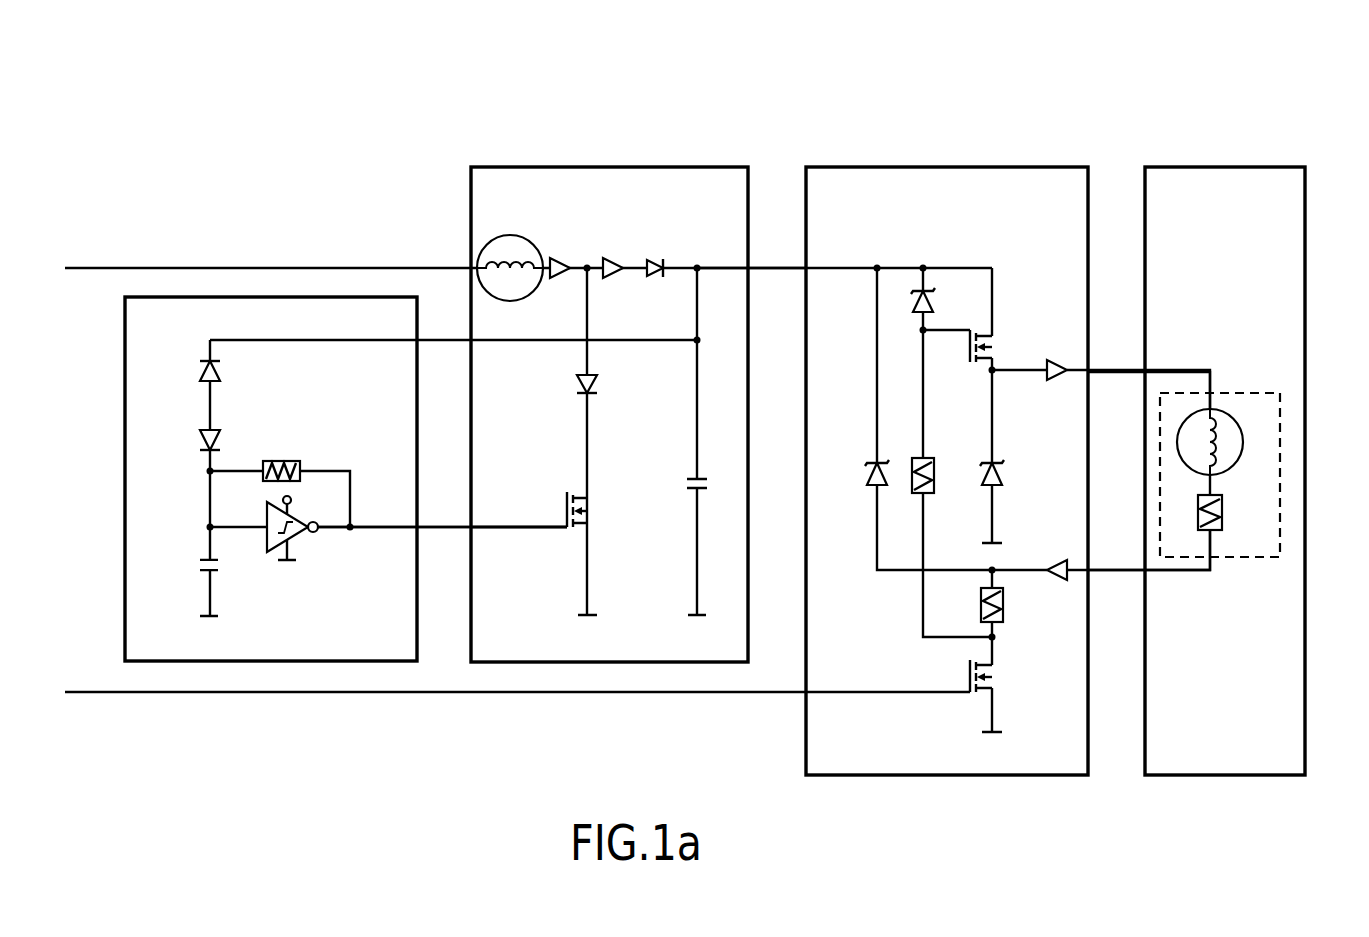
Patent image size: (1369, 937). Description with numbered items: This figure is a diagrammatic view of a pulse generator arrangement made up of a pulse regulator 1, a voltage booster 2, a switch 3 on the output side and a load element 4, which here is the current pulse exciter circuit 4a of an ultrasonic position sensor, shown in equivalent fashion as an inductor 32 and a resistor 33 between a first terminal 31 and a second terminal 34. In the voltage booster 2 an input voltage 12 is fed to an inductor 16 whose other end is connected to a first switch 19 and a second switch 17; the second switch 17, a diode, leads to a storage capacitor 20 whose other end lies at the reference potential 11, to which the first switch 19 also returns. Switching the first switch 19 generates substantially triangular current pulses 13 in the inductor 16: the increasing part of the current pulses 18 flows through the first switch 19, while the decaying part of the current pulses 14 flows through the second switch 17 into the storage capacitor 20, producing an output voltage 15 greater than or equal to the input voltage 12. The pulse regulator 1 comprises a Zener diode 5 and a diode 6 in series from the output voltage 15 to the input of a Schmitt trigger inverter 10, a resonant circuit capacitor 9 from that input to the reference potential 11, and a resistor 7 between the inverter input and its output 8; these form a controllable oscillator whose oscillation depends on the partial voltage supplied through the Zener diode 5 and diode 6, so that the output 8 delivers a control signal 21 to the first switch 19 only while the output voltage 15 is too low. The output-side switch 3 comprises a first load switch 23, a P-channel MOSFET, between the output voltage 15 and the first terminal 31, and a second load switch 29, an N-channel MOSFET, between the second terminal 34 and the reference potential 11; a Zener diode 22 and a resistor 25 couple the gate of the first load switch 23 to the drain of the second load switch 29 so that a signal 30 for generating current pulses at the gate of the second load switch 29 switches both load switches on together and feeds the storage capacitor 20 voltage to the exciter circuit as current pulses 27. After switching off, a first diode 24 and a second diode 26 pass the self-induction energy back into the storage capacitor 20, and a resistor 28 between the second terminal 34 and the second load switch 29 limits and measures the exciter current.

The pulse regulator 1 is at (245, 268).
The voltage booster 2 is at (598, 167).
The switch on the output side 3 is at (1007, 167).
The load element 4 is at (1218, 167).
The current pulse exciter circuit 4a is at (1270, 455).
The Zener diode 5 is at (200, 372).
The diode 6 is at (200, 440).
The resistor 7 is at (280, 458).
The output 8 is at (378, 527).
The resonant circuit capacitor 9 is at (200, 565).
The Schmitt trigger inverter 10 is at (310, 540).
The reference potential 11 is at (213, 617).
The input voltage 12 is at (432, 268).
The current pulses 13 is at (567, 258).
The part of the current pulses 14 is at (613, 258).
The output voltage 15 is at (720, 268).
The inductor 16 is at (510, 301).
The second switch 17 is at (655, 278).
The part of the current pulses 18 is at (597, 383).
The first switch 19 is at (563, 512).
The storage capacitor 20 is at (690, 483).
The control signal 21 is at (520, 530).
The Zener diode 22 is at (935, 300).
The first load switch 23 is at (993, 340).
The first diode 24 is at (870, 463).
The resistor 25 is at (935, 462).
The second diode 26 is at (1000, 463).
The current pulses 27 is at (1050, 383).
The resistor 28 is at (1000, 605).
The second load switch 29 is at (995, 678).
The signal for generating current pulses 30 is at (622, 694).
The first terminal 31 is at (1180, 372).
The inductor 32 is at (1180, 455).
The resistor 33 is at (1200, 510).
The second terminal 34 is at (1167, 572).